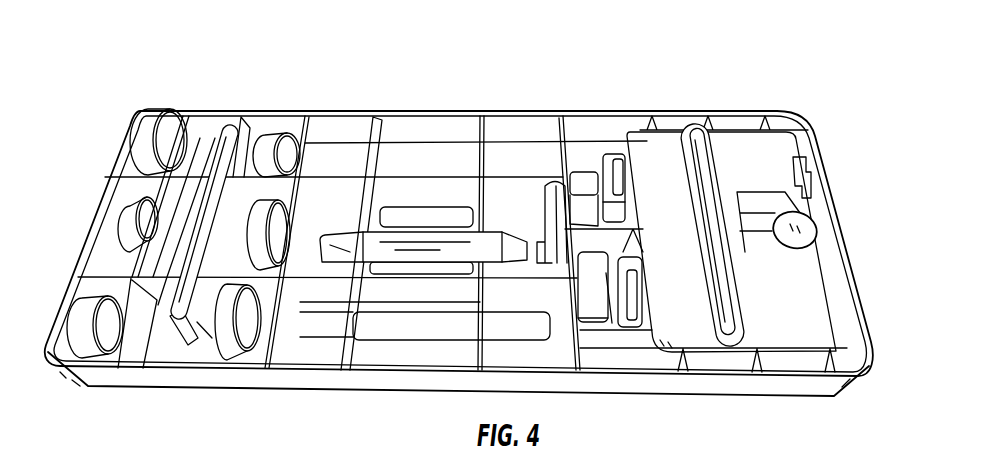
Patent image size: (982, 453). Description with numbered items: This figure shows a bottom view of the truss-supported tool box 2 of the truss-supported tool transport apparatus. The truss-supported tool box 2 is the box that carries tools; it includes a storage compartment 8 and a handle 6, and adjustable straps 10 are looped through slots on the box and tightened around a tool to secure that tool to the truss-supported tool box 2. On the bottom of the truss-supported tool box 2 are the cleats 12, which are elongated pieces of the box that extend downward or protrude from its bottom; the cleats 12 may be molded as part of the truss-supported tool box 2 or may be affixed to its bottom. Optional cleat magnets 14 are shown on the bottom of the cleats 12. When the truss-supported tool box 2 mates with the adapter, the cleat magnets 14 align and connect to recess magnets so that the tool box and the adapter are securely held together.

The truss-supported tool box 2 is at (819, 116).
The handle 6 is at (420, 240).
The storage compartment 8 is at (796, 326).
The straps 10 is at (146, 127).
The cleats 12 is at (195, 332).
The cleat magnets 14 is at (221, 140).